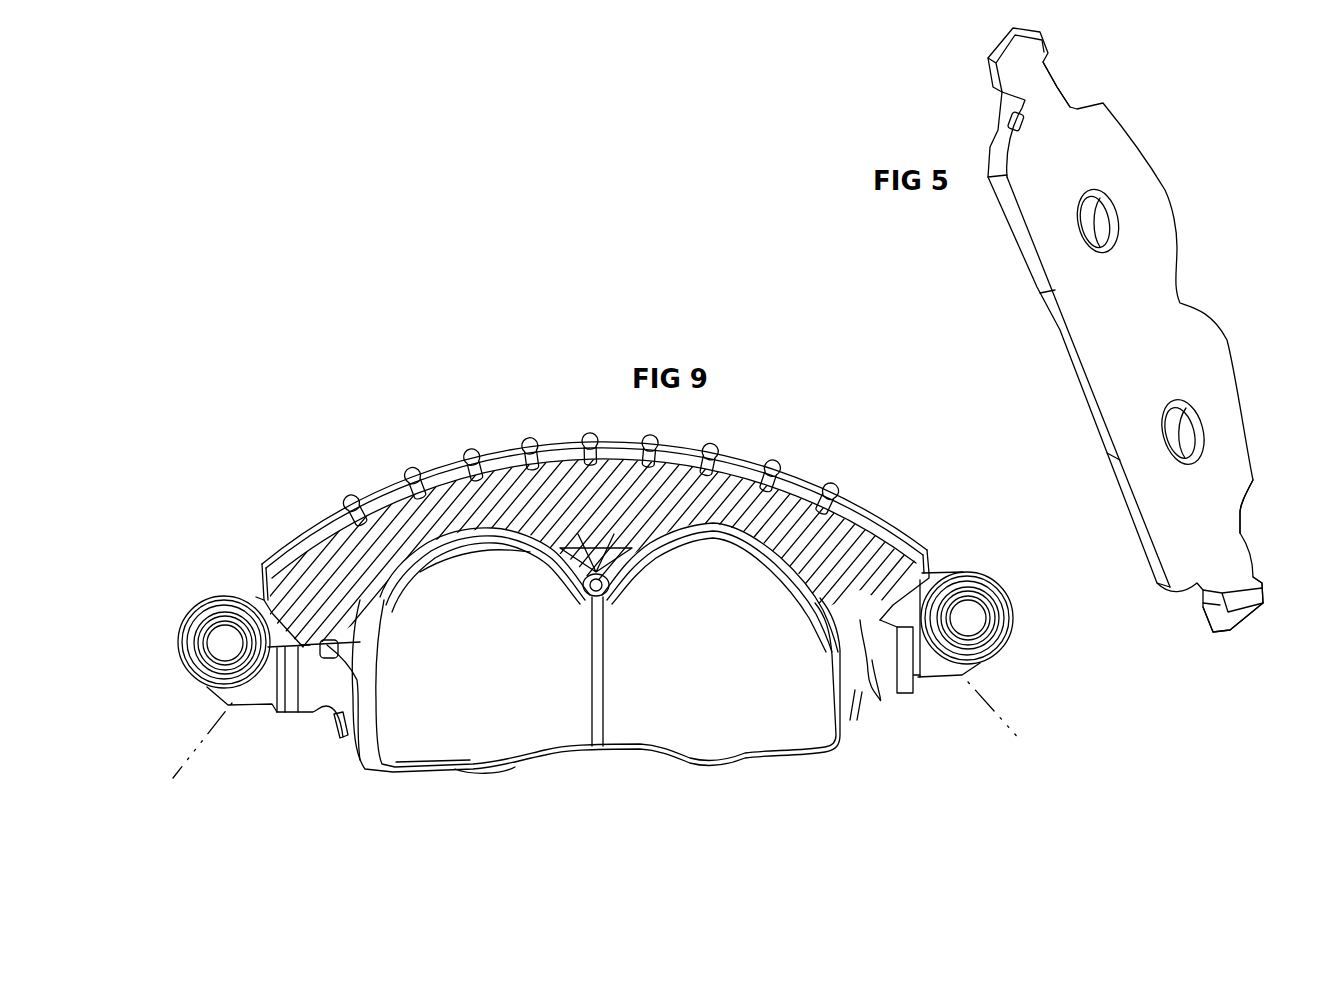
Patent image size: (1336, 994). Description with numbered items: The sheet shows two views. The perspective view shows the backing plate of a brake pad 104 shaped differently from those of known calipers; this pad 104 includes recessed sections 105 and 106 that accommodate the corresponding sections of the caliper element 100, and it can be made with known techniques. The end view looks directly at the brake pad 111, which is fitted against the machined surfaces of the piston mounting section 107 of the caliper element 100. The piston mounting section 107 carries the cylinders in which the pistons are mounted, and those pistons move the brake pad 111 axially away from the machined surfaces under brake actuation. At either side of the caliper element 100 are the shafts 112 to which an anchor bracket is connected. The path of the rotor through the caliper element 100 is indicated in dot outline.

In FIG. 9, the caliper element 100 is at (400, 425).
In FIG. 5, the brake pad 104 is at (1014, 292).
In FIG. 9, the recessed section 105 is at (337, 643).
In FIG. 5, the recessed section 105 is at (1055, 82).
In FIG. 9, the recessed section 106 is at (607, 596).
In FIG. 5, the recessed section 106 is at (1177, 288).
In FIG. 9, the piston mounting section 107 is at (487, 530).
In FIG. 9, the brake pad 111 is at (507, 712).
In FIG. 9, the shaft 112 is at (225, 643).